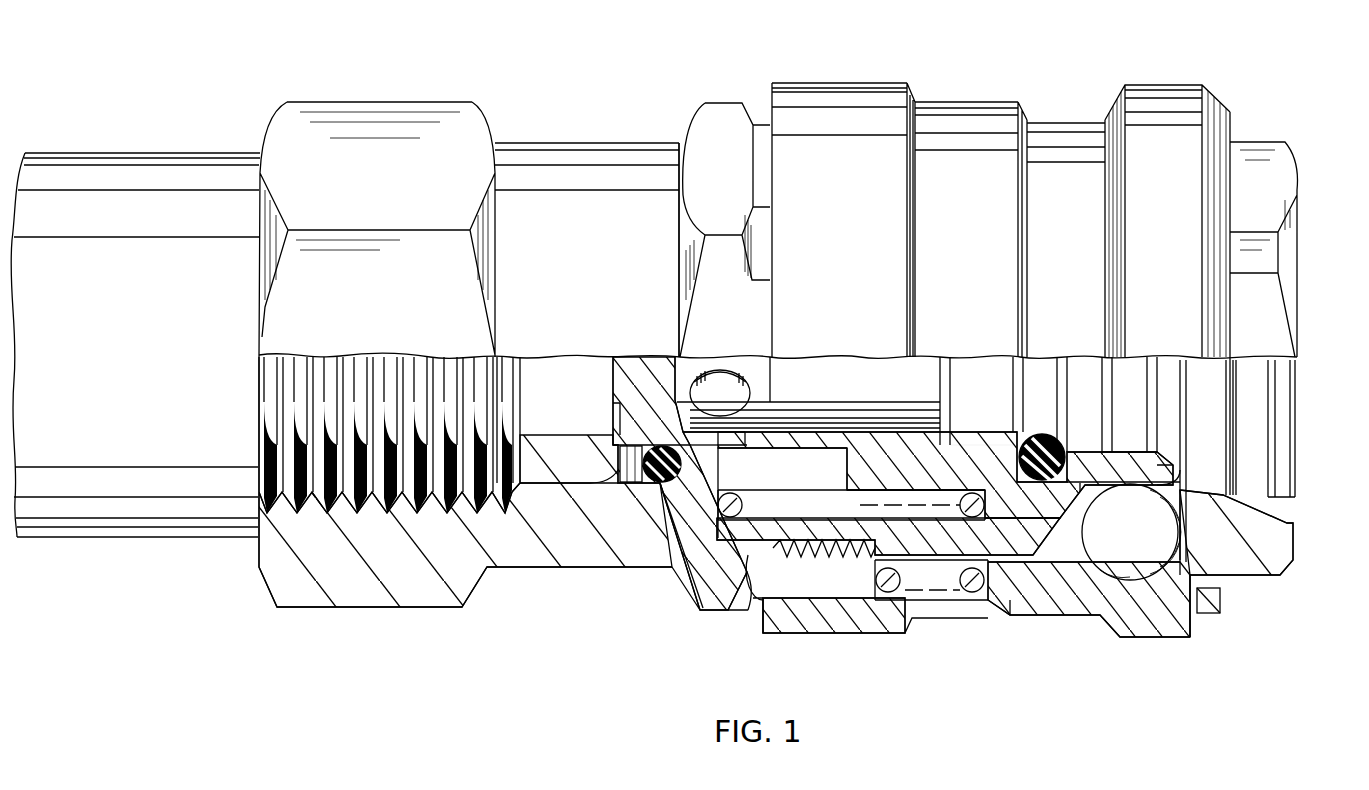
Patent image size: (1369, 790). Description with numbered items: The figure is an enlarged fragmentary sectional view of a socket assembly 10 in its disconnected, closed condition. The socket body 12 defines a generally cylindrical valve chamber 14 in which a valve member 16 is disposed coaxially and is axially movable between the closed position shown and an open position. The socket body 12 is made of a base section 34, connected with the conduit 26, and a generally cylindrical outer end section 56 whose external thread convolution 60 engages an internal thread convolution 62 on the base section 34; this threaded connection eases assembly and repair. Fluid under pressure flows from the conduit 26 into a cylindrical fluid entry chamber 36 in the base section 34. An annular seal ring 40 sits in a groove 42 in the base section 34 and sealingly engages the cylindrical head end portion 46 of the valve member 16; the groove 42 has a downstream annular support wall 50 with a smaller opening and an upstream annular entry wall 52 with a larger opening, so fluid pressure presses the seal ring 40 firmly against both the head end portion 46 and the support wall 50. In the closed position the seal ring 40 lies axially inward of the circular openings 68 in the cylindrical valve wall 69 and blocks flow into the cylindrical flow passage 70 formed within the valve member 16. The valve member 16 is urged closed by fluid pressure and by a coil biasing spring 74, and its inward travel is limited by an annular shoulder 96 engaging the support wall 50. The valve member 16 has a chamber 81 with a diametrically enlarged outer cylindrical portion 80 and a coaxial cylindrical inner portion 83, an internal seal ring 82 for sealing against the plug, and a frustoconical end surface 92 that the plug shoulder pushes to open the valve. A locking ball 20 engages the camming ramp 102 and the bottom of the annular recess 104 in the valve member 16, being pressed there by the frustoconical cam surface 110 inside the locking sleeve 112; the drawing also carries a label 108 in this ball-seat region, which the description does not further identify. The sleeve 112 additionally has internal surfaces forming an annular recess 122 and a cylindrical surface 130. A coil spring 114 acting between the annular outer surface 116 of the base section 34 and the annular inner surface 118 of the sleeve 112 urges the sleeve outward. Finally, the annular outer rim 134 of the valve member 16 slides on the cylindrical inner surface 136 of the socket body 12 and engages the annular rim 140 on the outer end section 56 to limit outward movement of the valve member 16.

The socket assembly 10 is at (1248, 103).
The socket body 12 is at (670, 608).
The valve chamber 14 is at (718, 492).
The valve member 16 is at (618, 355).
The locking balls 20 is at (1150, 553).
The conduit 26 is at (154, 172).
The base section 34 is at (475, 585).
The fluid entry chamber 36 is at (572, 380).
The annular seal ring 40 is at (655, 485).
The groove 42 is at (613, 510).
The cylindrical head end portion 46 is at (623, 420).
The annular support wall 50 is at (727, 445).
The annular entry wall 52 is at (628, 458).
The outer end section 56 is at (1270, 540).
The external thread convolution 60 is at (787, 553).
The internal thread convolution 62 is at (795, 560).
The circular openings 68 is at (740, 385).
The cylindrical valve wall 69 is at (813, 433).
The cylindrical flow passage 70 is at (870, 360).
The coil biasing spring 74 is at (997, 438).
The outer cylindrical portion 80 is at (1175, 332).
The chamber 81 is at (968, 383).
The internal seal ring 82 is at (1050, 440).
The cylindrical inner portion 83 is at (972, 494).
The frustoconical end surface 92 is at (1165, 432).
The annular shoulder 96 is at (845, 460).
The camming ramp 102 is at (1183, 480).
The annular recess 104 is at (1130, 440).
The seat wall 108 is at (1187, 500).
The frustoconical cam surface 110 is at (1090, 568).
The locking sleeve 112 is at (952, 630).
The coil spring 114 is at (882, 600).
The annular outer surface 116 is at (867, 573).
The annular inner surface 118 is at (1000, 577).
The annular recess 122 is at (1197, 600).
The internal cylindrical surface 130 is at (1033, 605).
The annular outer rim 134 is at (1048, 512).
The cylindrical inner surface 136 is at (748, 556).
The annular rim 140 is at (1075, 505).